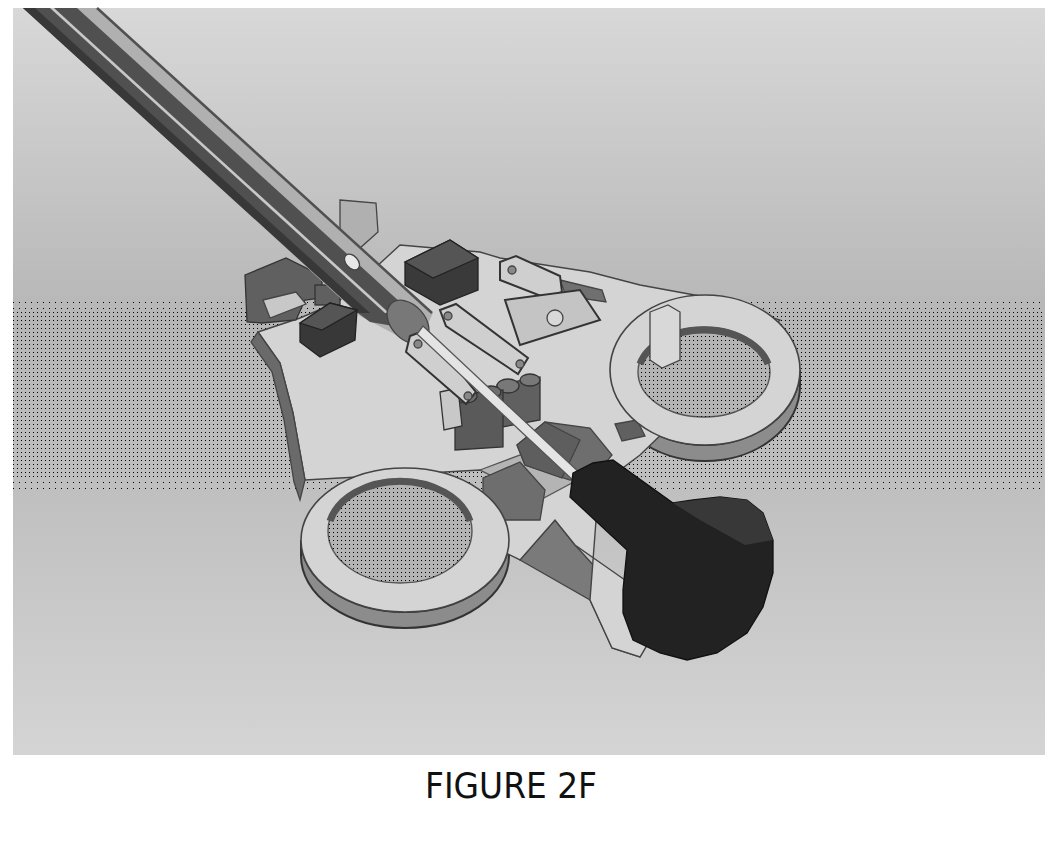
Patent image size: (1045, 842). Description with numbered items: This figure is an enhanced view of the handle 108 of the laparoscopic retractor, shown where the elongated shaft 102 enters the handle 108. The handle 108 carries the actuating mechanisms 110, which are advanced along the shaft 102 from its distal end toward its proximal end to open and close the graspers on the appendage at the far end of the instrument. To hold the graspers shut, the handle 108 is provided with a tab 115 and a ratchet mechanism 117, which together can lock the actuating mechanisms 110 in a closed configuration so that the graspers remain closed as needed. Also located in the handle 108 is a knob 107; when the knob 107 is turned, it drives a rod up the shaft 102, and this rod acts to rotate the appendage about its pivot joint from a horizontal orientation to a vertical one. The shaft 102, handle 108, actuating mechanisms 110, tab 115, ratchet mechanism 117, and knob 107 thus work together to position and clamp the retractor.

The shaft 102 is at (120, 108).
The knob 107 is at (778, 558).
The handle 108 is at (933, 332).
The actuating mechanisms 110 is at (752, 307).
The tab 115 is at (583, 283).
The ratchet mechanism 117 is at (455, 248).